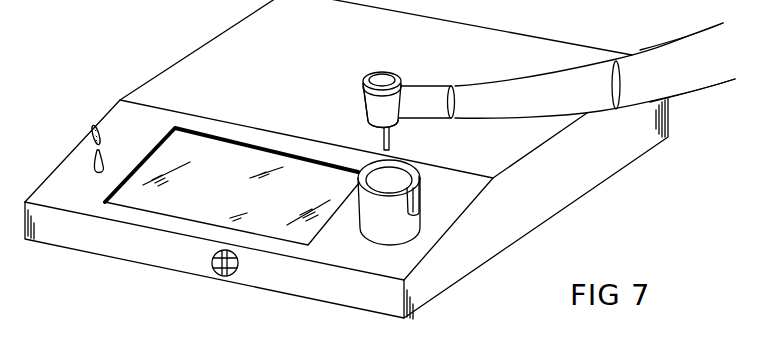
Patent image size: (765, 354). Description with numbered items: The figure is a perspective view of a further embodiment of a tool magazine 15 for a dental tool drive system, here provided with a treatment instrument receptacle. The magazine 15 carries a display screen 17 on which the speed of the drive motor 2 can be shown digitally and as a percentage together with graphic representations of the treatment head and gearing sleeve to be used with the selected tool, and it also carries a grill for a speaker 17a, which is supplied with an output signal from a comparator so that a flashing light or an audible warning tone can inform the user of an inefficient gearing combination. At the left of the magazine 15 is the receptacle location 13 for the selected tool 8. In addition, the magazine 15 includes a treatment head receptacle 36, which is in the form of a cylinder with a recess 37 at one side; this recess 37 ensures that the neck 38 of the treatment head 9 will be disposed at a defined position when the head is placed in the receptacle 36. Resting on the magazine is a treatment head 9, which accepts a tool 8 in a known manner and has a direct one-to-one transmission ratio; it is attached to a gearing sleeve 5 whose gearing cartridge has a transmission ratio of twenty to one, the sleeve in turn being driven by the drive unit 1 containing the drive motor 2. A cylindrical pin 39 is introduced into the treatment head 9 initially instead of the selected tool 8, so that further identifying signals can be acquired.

The drive unit 1 is at (703, 88).
The drive motor 2 is at (695, 48).
The gearing sleeve 5 is at (483, 83).
The tool 8 is at (91, 134).
The treatment head 9 is at (430, 86).
The receptacle location 13 is at (95, 168).
The magazine 15 is at (523, 218).
The display screen 17 is at (214, 200).
The speaker 17a is at (233, 277).
The treatment head receptacle 36 is at (372, 221).
The recess 37 is at (424, 198).
The neck 38 is at (408, 107).
The cylindrical pin 39 is at (382, 140).